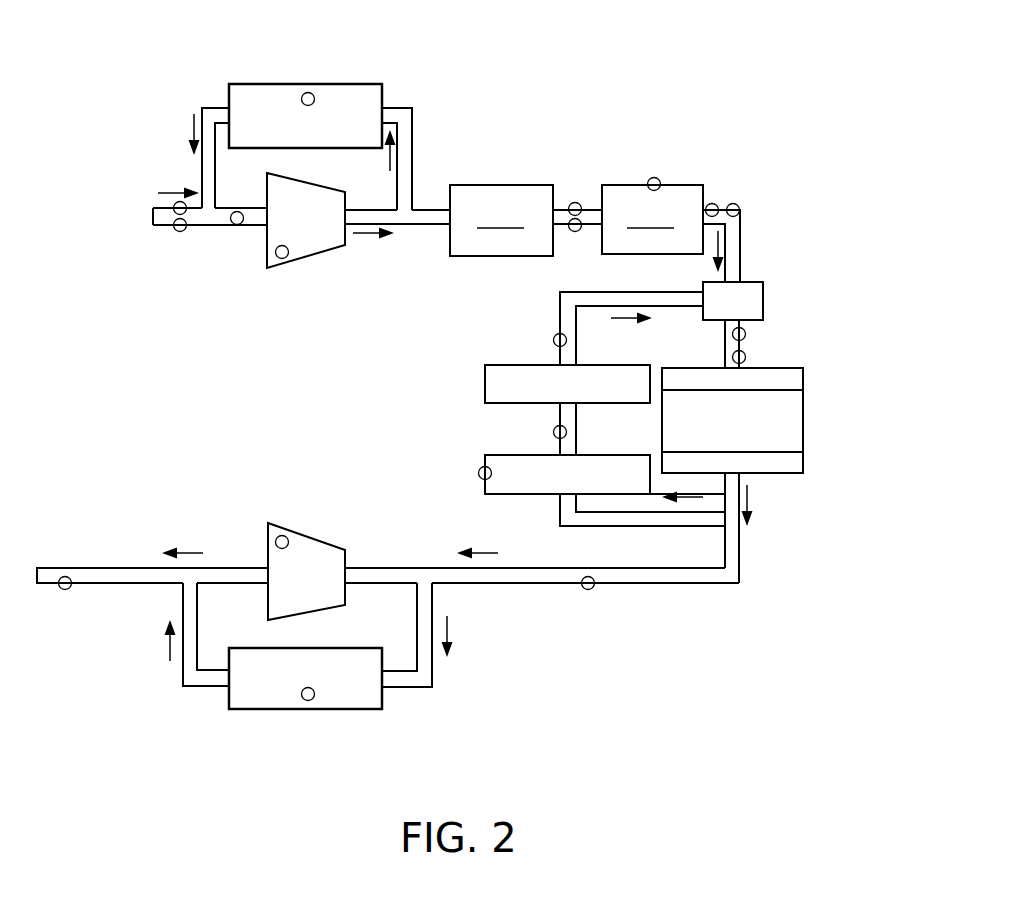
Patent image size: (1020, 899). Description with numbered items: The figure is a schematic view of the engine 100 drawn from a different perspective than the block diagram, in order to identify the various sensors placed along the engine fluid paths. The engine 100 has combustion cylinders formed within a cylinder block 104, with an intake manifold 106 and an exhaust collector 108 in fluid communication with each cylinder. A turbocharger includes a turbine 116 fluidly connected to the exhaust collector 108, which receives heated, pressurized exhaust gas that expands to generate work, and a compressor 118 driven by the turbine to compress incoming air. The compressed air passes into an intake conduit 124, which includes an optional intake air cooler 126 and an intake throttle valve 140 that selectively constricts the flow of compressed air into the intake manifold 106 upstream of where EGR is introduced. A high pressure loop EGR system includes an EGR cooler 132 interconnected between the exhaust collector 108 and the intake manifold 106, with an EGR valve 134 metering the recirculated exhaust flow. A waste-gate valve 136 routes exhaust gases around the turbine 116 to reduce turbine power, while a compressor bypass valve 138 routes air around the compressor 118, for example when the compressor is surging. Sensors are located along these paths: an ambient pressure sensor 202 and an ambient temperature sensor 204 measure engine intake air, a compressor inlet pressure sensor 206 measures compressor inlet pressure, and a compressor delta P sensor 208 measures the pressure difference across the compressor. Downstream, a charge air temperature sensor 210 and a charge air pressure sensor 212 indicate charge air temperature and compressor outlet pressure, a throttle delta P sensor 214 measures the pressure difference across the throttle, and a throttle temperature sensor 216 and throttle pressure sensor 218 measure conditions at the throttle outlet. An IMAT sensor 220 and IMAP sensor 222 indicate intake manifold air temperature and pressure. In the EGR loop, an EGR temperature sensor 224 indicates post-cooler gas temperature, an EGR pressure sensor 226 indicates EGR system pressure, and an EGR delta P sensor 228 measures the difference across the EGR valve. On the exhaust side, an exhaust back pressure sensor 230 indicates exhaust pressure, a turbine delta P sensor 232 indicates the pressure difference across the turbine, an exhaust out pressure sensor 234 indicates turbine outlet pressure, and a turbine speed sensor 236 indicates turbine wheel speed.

The engine 100 is at (773, 83).
The cylinder block 104 is at (790, 412).
The intake manifold 106 is at (793, 375).
The exhaust collector 108 is at (793, 460).
The turbine 116 is at (310, 537).
The compressor 118 is at (305, 250).
The intake conduit 124 is at (741, 262).
The intake air cooler 126 is at (501, 220).
The EGR cooler 132 is at (490, 382).
The EGR valve 134 is at (510, 487).
The waste-gate valve 136 is at (365, 703).
The compressor bypass valve 138 is at (363, 90).
The intake throttle valve 140 is at (652, 219).
The ambient pressure sensor 202 is at (173, 204).
The ambient temperature sensor 204 is at (181, 232).
The compressor inlet pressure sensor 206 is at (237, 226).
The compressor delta P sensor 208 is at (308, 92).
The charge air temperature sensor 210 is at (575, 202).
The charge air pressure sensor 212 is at (571, 232).
The throttle delta P sensor 214 is at (654, 177).
The throttle temperature sensor 216 is at (715, 203).
The throttle pressure sensor 218 is at (738, 203).
The IMAT sensor 220 is at (746, 334).
The IMAP sensor 222 is at (746, 357).
The EGR temperature sensor 224 is at (553, 340).
The EGR pressure sensor 226 is at (553, 432).
The EGR delta P sensor 228 is at (478, 473).
The exhaust back pressure sensor 230 is at (586, 590).
The turbine delta P sensor 232 is at (306, 701).
The exhaust out pressure sensor 234 is at (64, 590).
The turbine speed sensor 236 is at (280, 535).